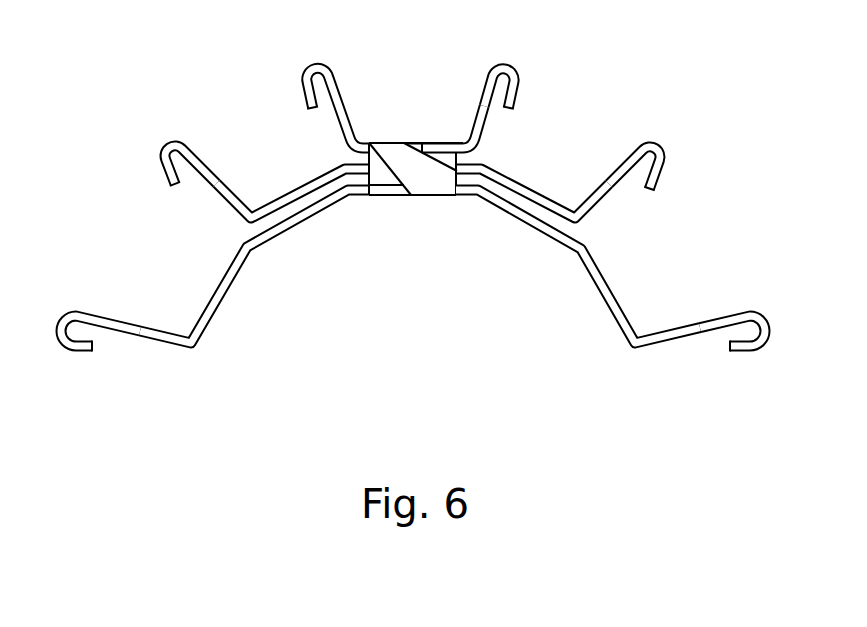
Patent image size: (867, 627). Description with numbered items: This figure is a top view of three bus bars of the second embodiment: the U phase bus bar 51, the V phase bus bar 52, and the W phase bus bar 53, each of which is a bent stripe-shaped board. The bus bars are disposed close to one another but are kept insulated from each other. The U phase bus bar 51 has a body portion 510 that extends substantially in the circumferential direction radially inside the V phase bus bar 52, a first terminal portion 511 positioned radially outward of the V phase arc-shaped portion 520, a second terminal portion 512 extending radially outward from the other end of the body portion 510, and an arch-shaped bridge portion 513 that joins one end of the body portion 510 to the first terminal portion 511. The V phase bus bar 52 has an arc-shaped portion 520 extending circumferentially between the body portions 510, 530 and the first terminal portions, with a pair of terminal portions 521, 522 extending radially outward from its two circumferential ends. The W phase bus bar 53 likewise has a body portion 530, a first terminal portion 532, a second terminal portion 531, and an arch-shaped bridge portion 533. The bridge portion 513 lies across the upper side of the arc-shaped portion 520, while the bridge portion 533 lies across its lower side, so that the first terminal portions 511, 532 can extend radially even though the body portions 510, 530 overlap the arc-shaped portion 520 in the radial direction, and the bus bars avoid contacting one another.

The U phase bus bar 51 is at (541, 192).
The body portion 510 is at (528, 220).
The first terminal portion 511 is at (330, 67).
The second terminal portion 512 is at (757, 311).
The bridge portion 513 is at (421, 172).
The V phase bus bar 52 is at (411, 149).
The arc-shaped portion 520 is at (297, 195).
The terminal portion 521 is at (178, 140).
The terminal portion 522 is at (657, 147).
The W phase bus bar 53 is at (282, 191).
The body portion 530 is at (297, 222).
The second terminal portion 531 is at (64, 310).
The first terminal portion 532 is at (497, 67).
The bridge portion 533 is at (383, 186).